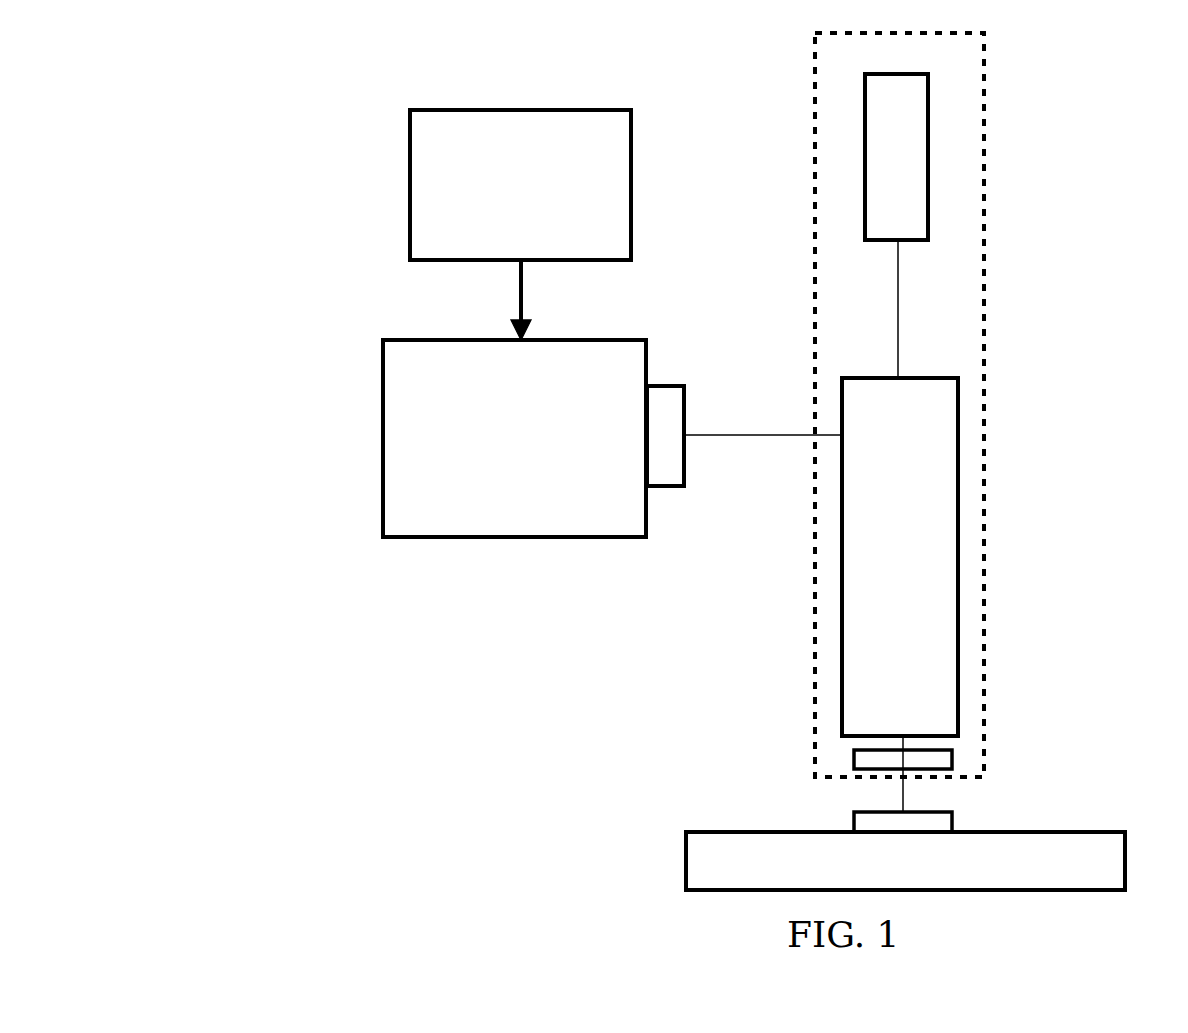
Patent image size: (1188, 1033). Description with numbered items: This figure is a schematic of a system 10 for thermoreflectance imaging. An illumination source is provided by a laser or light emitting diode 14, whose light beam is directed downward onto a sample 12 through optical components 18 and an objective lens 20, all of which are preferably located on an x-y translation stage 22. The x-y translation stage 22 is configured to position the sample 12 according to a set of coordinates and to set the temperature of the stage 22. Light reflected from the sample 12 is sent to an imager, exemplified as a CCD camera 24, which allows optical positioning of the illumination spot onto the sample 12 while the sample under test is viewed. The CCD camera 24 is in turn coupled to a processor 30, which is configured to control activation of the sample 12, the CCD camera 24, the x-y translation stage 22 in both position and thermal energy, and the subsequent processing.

The system 10 is at (341, 124).
The sample 12 is at (853, 823).
The laser or light emitting diode 14 is at (863, 131).
The optical components 18 is at (840, 693).
The objective lens 20 is at (853, 761).
The x-y translation stage 22 is at (972, 830).
The CCD camera 24 is at (382, 417).
The processor 30 is at (408, 196).